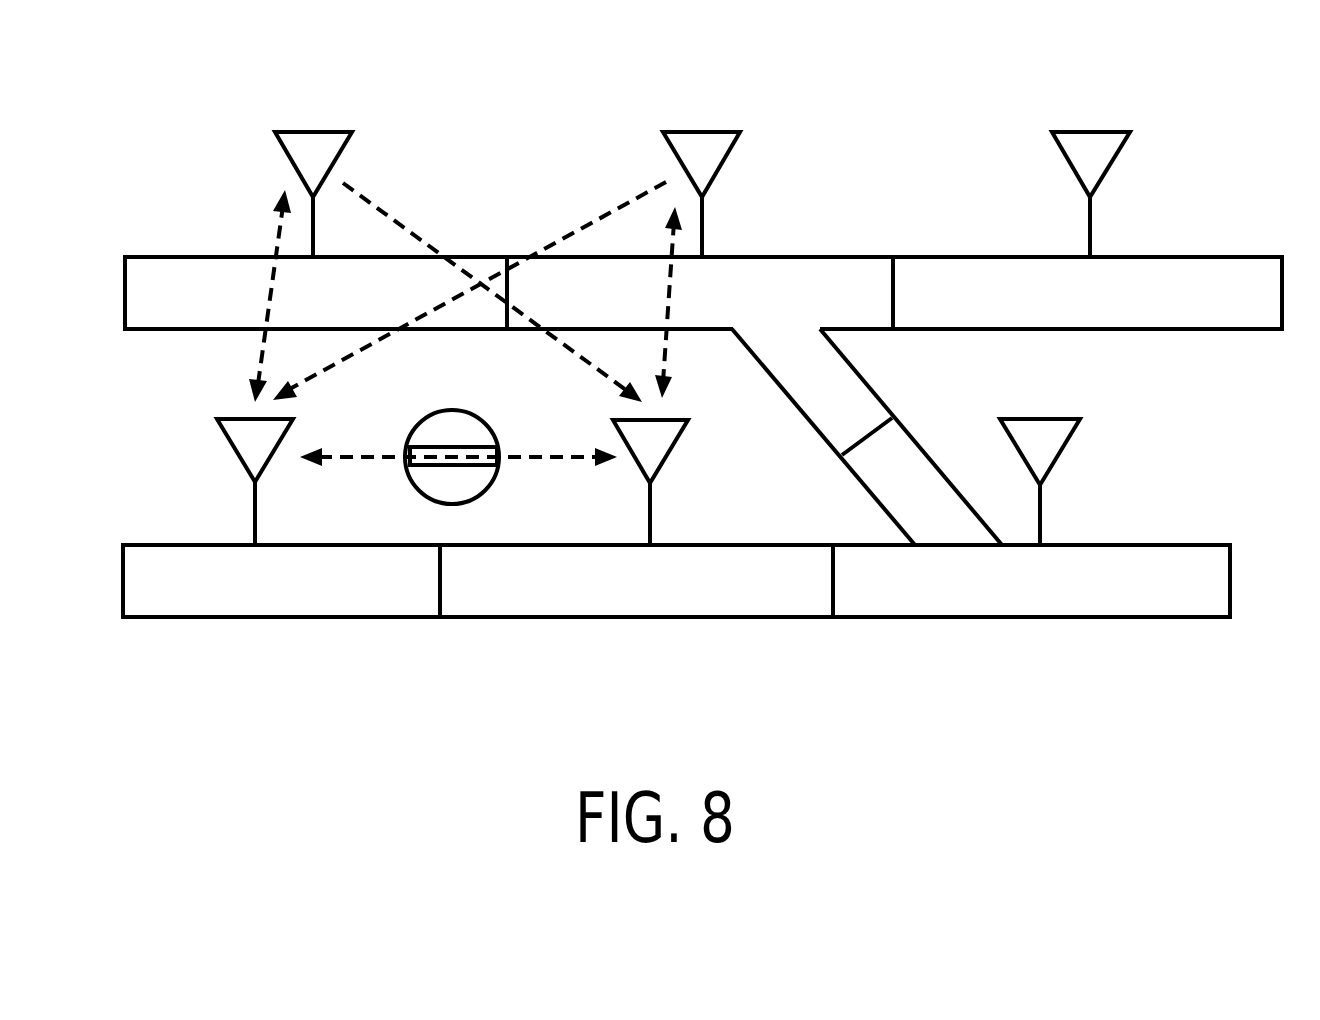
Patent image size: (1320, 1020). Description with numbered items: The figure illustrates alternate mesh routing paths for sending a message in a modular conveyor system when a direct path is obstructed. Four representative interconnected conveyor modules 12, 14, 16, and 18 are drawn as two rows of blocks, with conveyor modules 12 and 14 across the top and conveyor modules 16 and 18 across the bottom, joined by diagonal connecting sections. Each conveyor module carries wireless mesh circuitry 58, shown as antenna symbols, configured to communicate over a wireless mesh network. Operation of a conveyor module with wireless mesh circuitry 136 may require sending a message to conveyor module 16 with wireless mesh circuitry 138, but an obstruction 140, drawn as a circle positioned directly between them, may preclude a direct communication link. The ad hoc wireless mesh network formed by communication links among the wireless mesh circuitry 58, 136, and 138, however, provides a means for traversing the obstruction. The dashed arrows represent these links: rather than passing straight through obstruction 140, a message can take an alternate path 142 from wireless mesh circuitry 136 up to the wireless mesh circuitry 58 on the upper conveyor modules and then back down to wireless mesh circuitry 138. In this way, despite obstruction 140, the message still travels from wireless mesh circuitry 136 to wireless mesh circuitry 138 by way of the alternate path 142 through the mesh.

The conveyor module 12 is at (818, 256).
The conveyor module 14 is at (1222, 256).
The conveyor module 16 is at (622, 616).
The conveyor module 18 is at (1065, 618).
The wireless mesh circuitry 58 is at (317, 130).
The wireless mesh circuitry 136 is at (228, 442).
The wireless mesh circuitry 138 is at (675, 443).
The obstruction 140 is at (447, 412).
The alternate path 142 is at (273, 240).